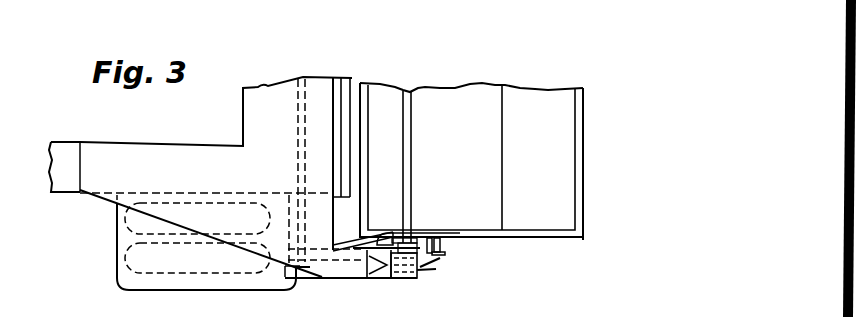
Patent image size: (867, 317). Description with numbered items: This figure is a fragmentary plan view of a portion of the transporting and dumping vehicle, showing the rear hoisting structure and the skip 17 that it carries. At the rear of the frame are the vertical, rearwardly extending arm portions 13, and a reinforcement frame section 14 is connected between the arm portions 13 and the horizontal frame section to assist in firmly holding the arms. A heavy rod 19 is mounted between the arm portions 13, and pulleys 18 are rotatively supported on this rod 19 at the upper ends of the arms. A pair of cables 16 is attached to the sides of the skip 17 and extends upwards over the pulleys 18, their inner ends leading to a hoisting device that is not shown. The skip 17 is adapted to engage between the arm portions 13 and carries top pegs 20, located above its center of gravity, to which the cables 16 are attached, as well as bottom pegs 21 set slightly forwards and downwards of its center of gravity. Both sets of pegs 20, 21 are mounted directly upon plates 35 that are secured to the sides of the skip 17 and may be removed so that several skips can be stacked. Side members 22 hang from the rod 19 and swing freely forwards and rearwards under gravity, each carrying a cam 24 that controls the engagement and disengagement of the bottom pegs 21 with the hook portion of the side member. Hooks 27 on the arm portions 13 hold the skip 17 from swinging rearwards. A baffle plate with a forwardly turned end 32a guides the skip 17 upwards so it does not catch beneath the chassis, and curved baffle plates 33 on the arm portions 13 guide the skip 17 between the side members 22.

The arm portions 13 is at (348, 275).
The reinforcement frame section 14 is at (263, 94).
The cables 16 is at (442, 260).
The skip 17 is at (578, 118).
The pulleys 18 is at (436, 270).
The rod 19 is at (408, 122).
The top pegs 20 is at (446, 249).
The bottom pegs 21 is at (431, 238).
The side members 22 is at (379, 237).
The cam 24 is at (415, 273).
The hooks 27 is at (363, 253).
The forwardly turned end 32a is at (348, 83).
The baffle plates 33 is at (342, 243).
The plates 35 is at (500, 239).